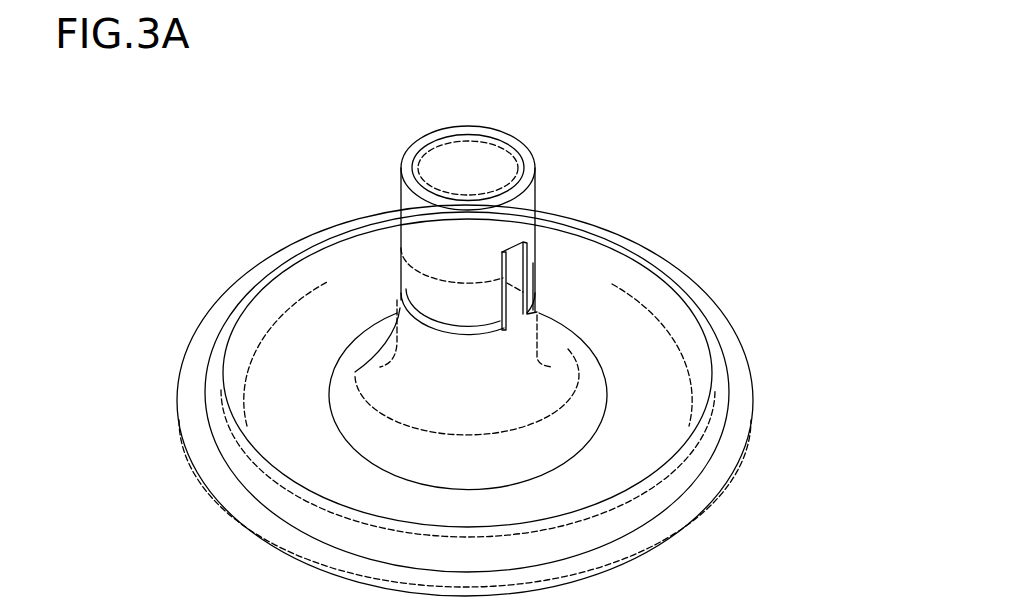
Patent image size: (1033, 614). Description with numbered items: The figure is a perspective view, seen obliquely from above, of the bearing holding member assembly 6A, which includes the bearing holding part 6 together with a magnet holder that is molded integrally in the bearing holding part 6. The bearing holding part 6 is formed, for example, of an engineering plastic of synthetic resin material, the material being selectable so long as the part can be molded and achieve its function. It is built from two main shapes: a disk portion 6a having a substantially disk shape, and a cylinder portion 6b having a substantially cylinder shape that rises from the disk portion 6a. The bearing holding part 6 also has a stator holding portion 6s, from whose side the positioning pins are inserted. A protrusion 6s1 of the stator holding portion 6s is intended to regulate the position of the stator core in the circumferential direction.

The bearing holding member assembly 6A is at (658, 126).
The bearing holding part 6 is at (629, 236).
The disk portion 6a is at (672, 383).
The cylinder portion 6b is at (348, 368).
The stator holding portion 6s is at (393, 240).
The protrusion 6s1 is at (537, 272).